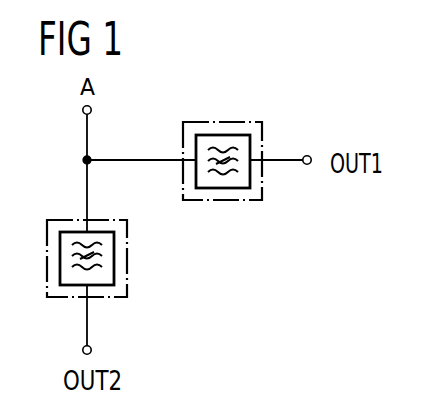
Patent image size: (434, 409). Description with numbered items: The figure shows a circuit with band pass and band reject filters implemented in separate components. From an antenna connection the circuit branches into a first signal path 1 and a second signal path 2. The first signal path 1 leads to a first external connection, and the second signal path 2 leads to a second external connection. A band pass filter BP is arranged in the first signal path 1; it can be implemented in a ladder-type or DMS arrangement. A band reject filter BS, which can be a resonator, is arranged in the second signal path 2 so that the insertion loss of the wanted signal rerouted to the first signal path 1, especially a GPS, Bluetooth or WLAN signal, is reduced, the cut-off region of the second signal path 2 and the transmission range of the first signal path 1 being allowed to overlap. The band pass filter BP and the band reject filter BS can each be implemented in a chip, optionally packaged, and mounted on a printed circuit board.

The first signal path 1 is at (118, 160).
The second signal path 2 is at (85, 190).
The band pass filter BP is at (222, 134).
The band reject filter BS is at (114, 257).